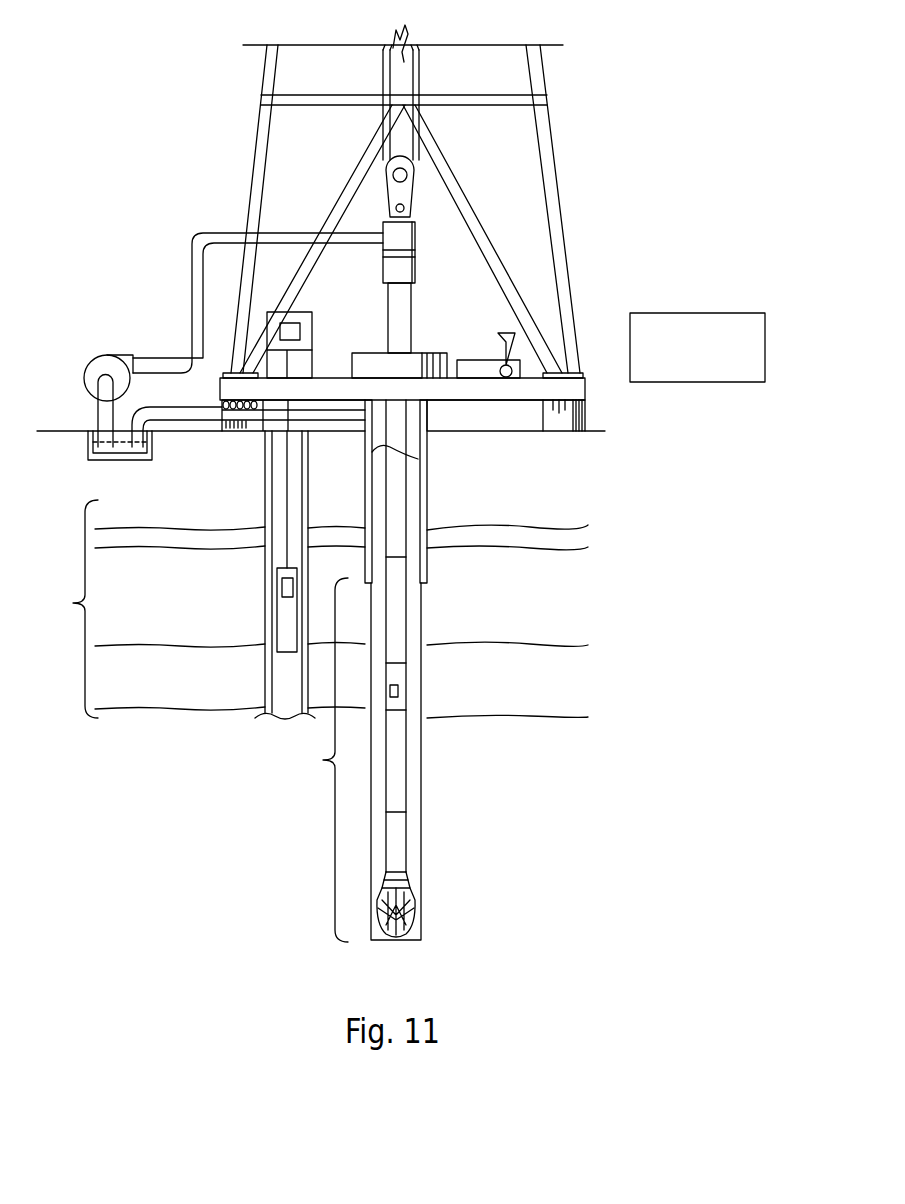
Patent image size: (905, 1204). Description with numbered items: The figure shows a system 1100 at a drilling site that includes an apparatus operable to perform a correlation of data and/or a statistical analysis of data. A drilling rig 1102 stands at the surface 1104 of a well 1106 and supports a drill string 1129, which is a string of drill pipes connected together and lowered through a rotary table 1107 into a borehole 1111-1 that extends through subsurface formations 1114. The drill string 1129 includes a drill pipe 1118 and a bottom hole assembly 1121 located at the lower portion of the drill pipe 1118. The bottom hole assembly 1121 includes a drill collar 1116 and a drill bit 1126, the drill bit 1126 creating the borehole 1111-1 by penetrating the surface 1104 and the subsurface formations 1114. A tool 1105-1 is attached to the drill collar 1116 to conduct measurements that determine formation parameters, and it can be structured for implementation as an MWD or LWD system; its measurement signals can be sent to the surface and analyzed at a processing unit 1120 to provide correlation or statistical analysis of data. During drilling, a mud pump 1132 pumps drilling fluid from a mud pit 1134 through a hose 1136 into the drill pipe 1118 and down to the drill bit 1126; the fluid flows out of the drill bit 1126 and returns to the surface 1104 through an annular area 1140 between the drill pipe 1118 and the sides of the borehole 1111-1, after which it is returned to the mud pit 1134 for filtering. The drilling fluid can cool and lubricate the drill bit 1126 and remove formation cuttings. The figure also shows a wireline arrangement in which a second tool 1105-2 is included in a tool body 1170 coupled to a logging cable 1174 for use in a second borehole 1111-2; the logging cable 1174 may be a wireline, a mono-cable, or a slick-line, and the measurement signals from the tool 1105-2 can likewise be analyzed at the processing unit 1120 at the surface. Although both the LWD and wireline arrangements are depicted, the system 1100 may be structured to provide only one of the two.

The system 1100 is at (193, 76).
The drilling rig 1102 is at (555, 128).
The surface 1104 is at (613, 428).
The tool 1105-1 is at (400, 688).
The tool 1105-2 is at (282, 585).
The well 1106 is at (435, 424).
The rotary table 1107 is at (377, 352).
The borehole 1111-1 is at (414, 533).
The borehole 1111-2 is at (265, 522).
The subsurface formations 1114 is at (60, 609).
The drill collar 1116 is at (398, 673).
The drill pipe 1118 is at (407, 595).
The processing unit 1120 is at (693, 313).
The bottom hole assembly 1121 is at (309, 760).
The drill bit 1126 is at (413, 907).
The drill string 1129 is at (413, 477).
The mud pump 1132 is at (112, 357).
The mud pit 1134 is at (90, 435).
The hose 1136 is at (192, 297).
The annular area 1140 is at (412, 628).
The tool body 1170 is at (277, 628).
The logging cable 1174 is at (285, 482).